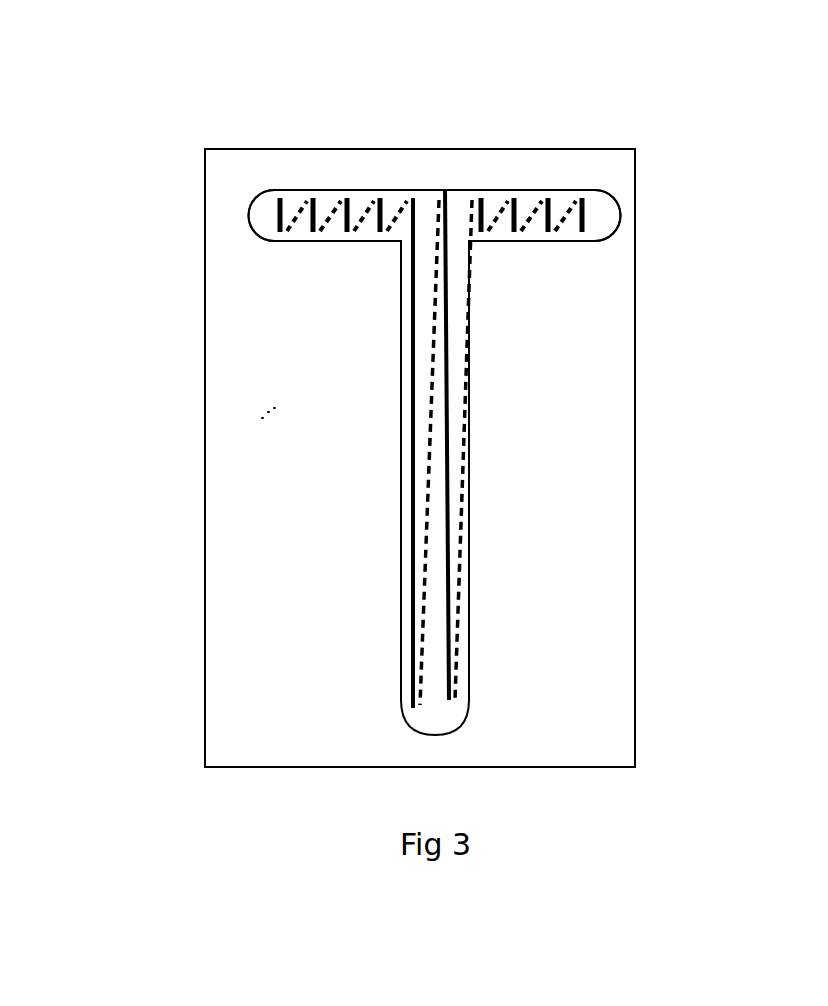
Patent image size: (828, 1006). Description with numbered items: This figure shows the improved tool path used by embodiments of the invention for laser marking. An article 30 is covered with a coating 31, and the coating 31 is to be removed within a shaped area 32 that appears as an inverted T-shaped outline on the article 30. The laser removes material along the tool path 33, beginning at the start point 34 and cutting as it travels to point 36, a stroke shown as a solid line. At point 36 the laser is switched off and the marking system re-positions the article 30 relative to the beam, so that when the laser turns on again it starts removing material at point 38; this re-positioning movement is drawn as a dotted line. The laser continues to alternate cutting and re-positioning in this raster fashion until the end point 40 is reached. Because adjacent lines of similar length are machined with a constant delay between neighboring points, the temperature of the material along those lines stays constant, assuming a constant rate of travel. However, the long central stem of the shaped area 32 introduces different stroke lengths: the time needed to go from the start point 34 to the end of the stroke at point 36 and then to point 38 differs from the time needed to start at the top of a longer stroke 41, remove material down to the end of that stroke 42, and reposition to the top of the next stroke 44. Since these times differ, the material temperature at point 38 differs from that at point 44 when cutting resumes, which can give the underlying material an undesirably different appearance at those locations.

The article 30 is at (205, 285).
The coating 31 is at (270, 410).
The shaped area 32 is at (402, 467).
The tool path 33 is at (413, 506).
The start point 34 is at (279, 199).
The point (end of the stroke) 36 is at (277, 229).
The point (start of the next stroke) 38 is at (309, 202).
The end point 40 is at (587, 223).
The top of a longer stroke 41 is at (413, 198).
The end of the stroke 42 is at (413, 707).
The top of the next stroke 44 is at (446, 196).